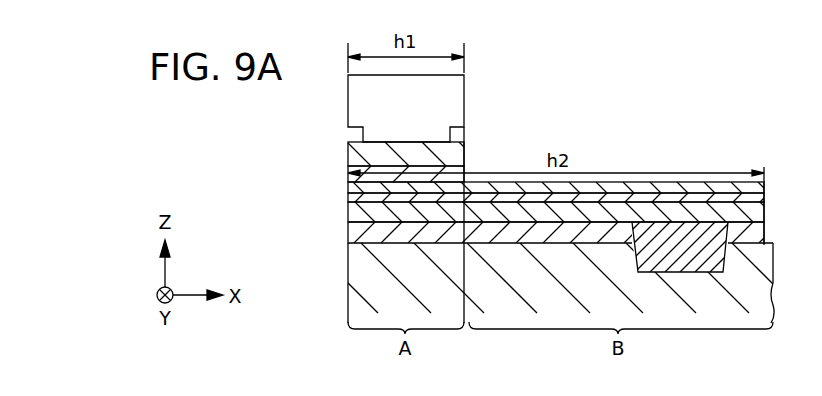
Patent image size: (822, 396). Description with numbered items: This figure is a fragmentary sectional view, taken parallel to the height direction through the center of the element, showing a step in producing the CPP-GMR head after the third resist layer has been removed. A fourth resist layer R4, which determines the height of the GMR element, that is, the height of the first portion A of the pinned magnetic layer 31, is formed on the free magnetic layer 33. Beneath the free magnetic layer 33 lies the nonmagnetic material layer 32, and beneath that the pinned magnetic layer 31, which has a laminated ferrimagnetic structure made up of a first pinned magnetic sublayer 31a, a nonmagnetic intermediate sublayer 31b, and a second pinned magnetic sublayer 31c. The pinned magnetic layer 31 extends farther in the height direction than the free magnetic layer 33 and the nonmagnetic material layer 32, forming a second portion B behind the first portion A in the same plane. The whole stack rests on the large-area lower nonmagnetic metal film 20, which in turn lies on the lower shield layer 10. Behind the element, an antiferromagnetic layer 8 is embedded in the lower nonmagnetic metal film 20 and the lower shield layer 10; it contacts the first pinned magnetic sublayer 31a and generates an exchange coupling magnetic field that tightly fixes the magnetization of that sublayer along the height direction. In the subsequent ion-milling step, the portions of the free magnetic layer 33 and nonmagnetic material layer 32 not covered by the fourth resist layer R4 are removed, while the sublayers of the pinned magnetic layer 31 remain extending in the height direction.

The fourth resist layer R4 is at (457, 105).
The free magnetic layer 33 is at (347, 160).
The nonmagnetic material layer 32 is at (347, 177).
The pinned magnetic layer 31 is at (508, 203).
The second pinned magnetic sublayer 31c is at (347, 186).
The nonmagnetic intermediate sublayer 31b is at (347, 200).
The first pinned magnetic sublayer 31a is at (519, 221).
The large-area lower nonmagnetic metal film 20 is at (347, 231).
The lower shield layer 10 is at (347, 275).
The antiferromagnetic layer 8 is at (718, 256).